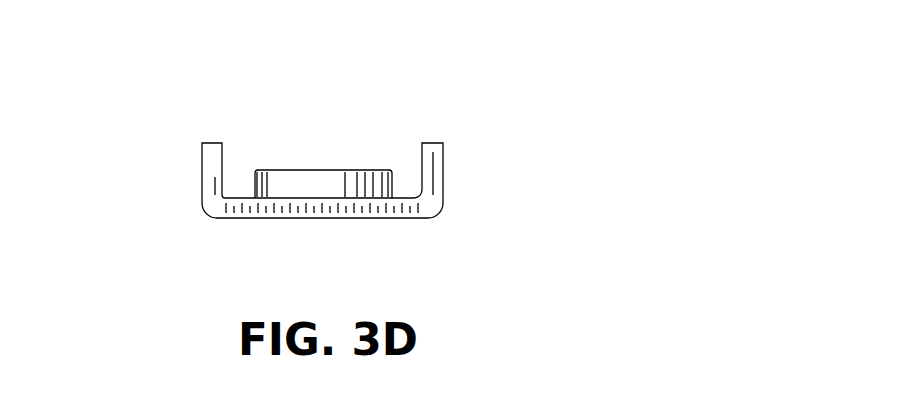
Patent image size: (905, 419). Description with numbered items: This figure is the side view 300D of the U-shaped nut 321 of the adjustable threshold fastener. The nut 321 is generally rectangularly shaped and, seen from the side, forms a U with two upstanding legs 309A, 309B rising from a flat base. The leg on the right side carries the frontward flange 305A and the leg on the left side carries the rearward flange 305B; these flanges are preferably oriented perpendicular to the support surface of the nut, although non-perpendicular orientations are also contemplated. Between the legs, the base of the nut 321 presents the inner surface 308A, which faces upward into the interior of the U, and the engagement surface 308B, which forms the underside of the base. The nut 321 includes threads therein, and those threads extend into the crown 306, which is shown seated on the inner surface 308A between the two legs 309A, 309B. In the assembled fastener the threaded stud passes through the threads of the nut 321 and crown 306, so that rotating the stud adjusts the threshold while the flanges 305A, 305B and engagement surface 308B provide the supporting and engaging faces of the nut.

The side view 300D is at (552, 52).
The nut 321 is at (252, 148).
The right sidewall 309A is at (433, 142).
The left sidewall 309B is at (210, 143).
The inner surface 308A is at (238, 198).
The engagement surface 308B is at (273, 218).
The frontward flange 305A is at (443, 175).
The rearward flange 305B is at (203, 177).
The crown 306 is at (393, 183).